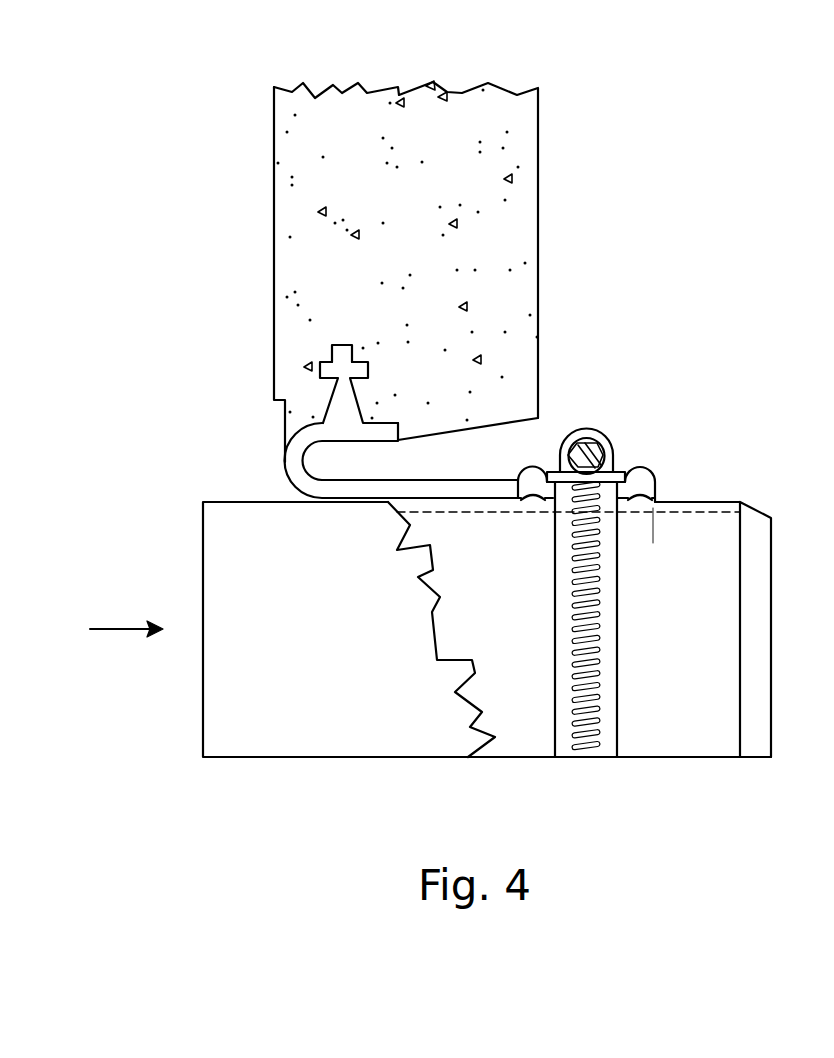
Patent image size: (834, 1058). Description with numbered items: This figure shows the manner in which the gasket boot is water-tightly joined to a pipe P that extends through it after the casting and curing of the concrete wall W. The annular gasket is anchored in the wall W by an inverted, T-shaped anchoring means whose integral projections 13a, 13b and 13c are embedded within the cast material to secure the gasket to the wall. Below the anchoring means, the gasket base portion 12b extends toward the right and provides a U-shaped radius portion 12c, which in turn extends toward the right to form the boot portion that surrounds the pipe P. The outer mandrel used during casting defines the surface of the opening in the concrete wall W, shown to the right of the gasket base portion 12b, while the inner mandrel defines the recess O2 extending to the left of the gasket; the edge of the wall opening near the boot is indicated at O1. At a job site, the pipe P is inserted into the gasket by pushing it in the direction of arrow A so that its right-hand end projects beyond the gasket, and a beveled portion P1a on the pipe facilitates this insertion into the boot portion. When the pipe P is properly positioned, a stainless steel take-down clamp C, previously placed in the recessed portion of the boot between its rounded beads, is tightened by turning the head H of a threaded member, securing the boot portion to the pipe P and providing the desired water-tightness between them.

The concrete wall W is at (470, 48).
The recess O2 is at (250, 422).
The wall bottom corner O1 is at (540, 430).
The integral projection 13a is at (320, 367).
The integral projection 13b is at (368, 377).
The integral projection 13c is at (370, 307).
The U-shaped radius portion 12c is at (293, 470).
The base portion 12b is at (382, 430).
The head H is at (598, 430).
The stainless steel take-down clamp C is at (643, 445).
The pipe P is at (368, 785).
The beveled portion P1a is at (757, 511).
The arrow A is at (116, 629).